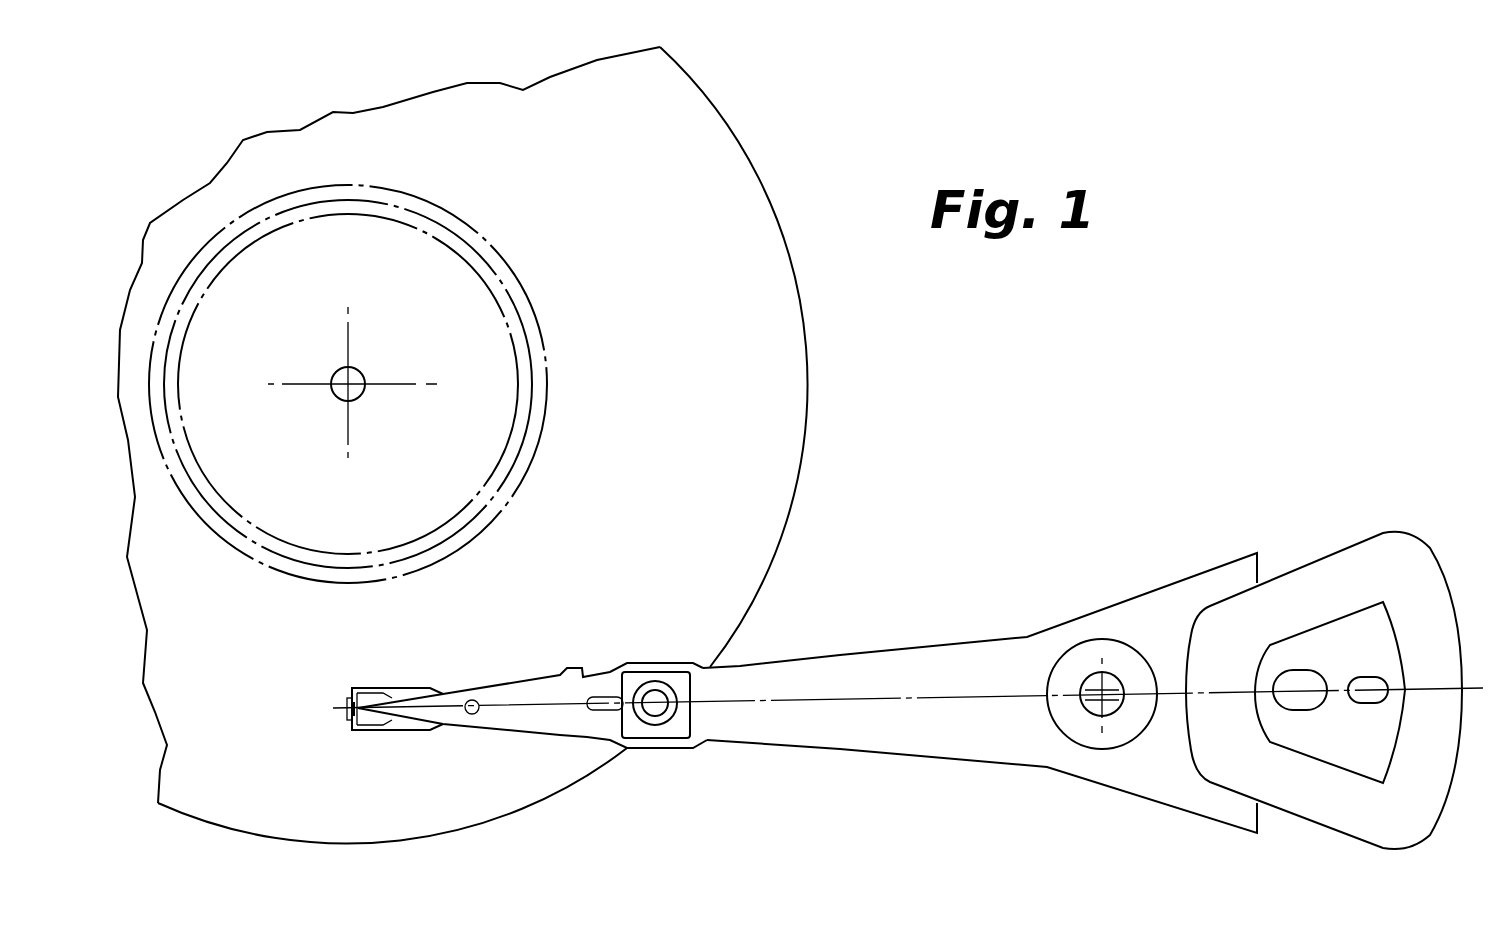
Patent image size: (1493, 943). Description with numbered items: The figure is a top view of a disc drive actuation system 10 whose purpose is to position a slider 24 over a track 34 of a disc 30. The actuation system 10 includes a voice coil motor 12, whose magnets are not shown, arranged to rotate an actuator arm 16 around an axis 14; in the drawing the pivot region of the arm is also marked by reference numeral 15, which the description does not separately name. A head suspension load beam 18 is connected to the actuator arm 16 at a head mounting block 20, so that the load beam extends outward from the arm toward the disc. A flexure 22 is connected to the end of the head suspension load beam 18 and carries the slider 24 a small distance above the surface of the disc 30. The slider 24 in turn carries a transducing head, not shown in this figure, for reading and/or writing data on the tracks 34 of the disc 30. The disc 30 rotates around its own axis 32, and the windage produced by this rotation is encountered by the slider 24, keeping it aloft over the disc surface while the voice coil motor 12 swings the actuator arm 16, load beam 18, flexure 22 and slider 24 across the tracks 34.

The disc drive actuation system 10 is at (1097, 443).
The voice coil motor 12 is at (1437, 553).
The axis 14 is at (1096, 726).
The pivot shaft 15 is at (1126, 636).
The actuator arm 16 is at (980, 690).
The head suspension load beam 18 is at (532, 670).
The head mounting block 20 is at (667, 661).
The flexure 22 is at (405, 673).
The slider 24 is at (348, 722).
The disc 30 is at (512, 445).
The axis 32 is at (355, 382).
The track 34 is at (376, 384).